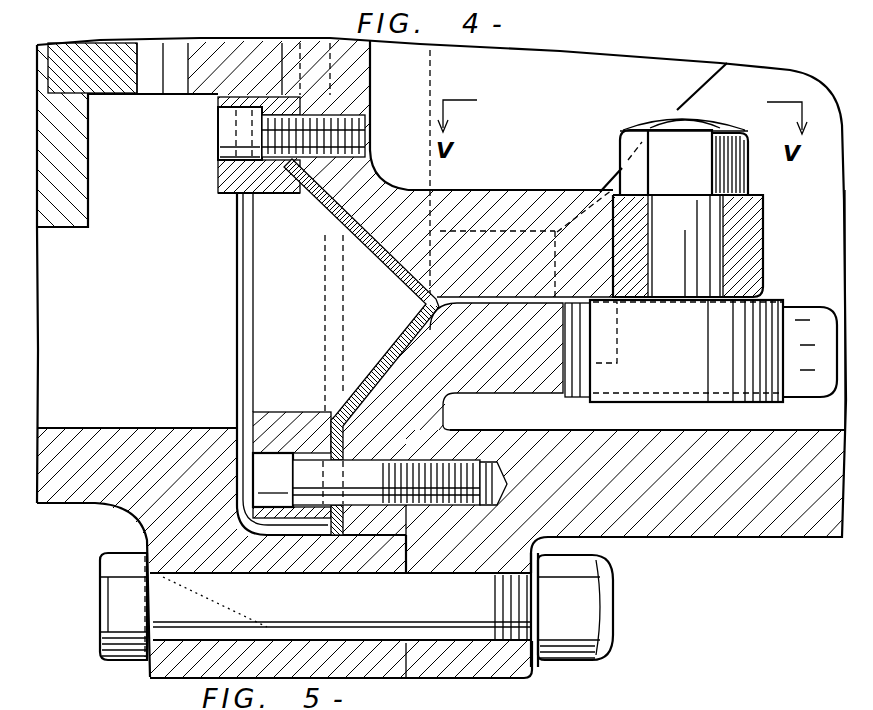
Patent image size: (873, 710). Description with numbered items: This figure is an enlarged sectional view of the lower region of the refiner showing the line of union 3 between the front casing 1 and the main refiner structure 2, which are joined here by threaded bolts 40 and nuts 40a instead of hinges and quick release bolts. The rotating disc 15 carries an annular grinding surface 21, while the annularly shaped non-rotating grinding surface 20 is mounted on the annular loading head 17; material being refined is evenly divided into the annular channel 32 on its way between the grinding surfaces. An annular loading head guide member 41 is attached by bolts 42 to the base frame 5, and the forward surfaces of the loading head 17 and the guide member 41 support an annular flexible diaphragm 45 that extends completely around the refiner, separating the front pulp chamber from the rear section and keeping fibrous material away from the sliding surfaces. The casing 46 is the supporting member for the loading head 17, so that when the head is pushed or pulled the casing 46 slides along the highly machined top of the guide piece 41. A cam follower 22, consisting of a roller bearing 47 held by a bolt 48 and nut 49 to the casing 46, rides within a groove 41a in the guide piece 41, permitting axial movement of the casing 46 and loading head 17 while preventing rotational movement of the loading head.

The front casing 1 is at (82, 537).
The main refiner structure 2 is at (792, 547).
The line of union 3 is at (408, 648).
The base frame 5 is at (808, 507).
The rotating disc 15 is at (66, 200).
The loading head 17 is at (348, 66).
The non-rotating grinding surface 20 is at (207, 53).
The annular grinding surface 21 is at (106, 48).
The cam follower 22 is at (800, 292).
The annular channel 32 is at (172, 73).
The threaded bolt 40 is at (463, 622).
The nut 40a is at (572, 656).
The loading head guide member 41 is at (425, 375).
The groove 41a is at (811, 378).
The bolt 42 is at (447, 480).
The flexible diaphragm 45 is at (376, 290).
The casing 46 is at (498, 213).
The roller bearing 47 is at (681, 373).
The bolt 48 is at (693, 230).
The nut 49 is at (742, 158).